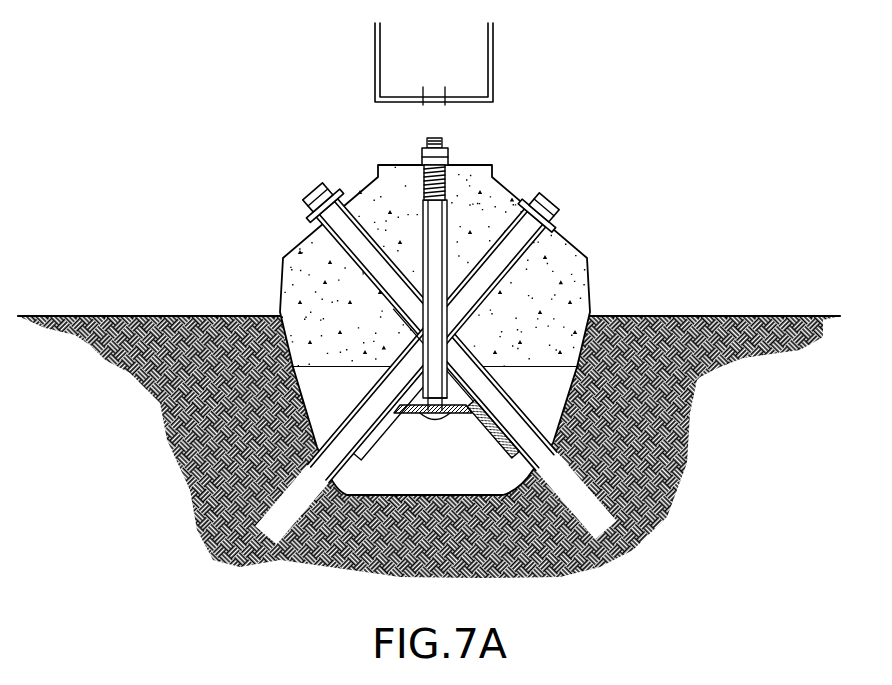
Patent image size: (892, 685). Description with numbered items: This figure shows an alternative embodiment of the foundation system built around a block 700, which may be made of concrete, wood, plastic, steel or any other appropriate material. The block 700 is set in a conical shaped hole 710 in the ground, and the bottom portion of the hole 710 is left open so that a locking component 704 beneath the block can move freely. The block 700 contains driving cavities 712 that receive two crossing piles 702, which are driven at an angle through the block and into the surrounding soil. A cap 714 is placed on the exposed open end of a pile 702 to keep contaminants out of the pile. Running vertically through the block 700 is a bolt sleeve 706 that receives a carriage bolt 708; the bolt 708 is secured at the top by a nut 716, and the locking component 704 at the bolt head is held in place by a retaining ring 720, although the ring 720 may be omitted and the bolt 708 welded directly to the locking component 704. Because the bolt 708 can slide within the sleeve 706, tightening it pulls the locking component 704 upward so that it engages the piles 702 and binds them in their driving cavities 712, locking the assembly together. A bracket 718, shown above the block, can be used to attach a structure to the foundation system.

The block 700 is at (503, 192).
The piles 702 is at (528, 255).
The locking component 704 is at (484, 436).
The bolt sleeve 706 is at (447, 268).
The carriage bolt 708 is at (447, 240).
The conical shaped hole 710 is at (377, 484).
The driving cavity 712 is at (460, 318).
The cap 714 is at (555, 197).
The nut 716 is at (448, 157).
The bracket 718 is at (493, 62).
The retaining ring 720 is at (427, 404).